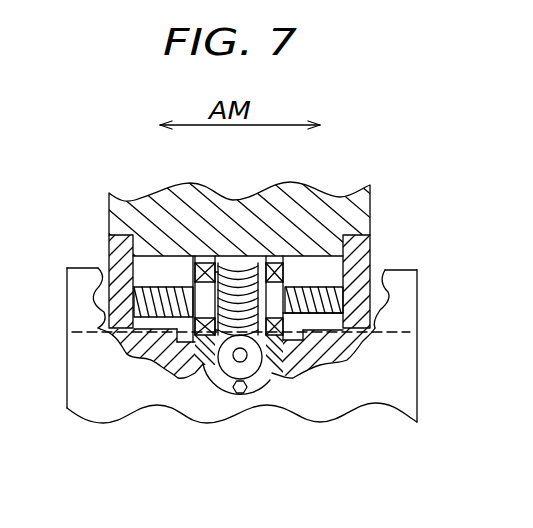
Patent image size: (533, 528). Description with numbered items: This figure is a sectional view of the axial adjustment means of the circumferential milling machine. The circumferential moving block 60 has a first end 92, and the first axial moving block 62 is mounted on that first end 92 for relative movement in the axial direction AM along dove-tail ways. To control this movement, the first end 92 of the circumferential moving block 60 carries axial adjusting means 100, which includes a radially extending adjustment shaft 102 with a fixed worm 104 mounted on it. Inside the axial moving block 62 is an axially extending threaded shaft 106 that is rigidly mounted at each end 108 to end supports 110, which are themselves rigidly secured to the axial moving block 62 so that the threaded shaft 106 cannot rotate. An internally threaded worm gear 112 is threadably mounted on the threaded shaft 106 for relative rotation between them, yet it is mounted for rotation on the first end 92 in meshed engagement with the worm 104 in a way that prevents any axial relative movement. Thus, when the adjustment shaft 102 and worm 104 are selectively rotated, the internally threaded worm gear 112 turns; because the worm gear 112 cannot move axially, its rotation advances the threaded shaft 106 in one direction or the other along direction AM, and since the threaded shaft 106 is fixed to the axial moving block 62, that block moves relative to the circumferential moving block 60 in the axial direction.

The circumferential moving block 60 is at (113, 403).
The first axial moving block 62 is at (318, 204).
The first end 92 is at (70, 357).
The axial adjusting means 100 is at (261, 418).
The adjustment shaft 102 is at (238, 355).
The worm 104 is at (228, 358).
The threaded shaft 106 is at (322, 312).
The end 108 is at (110, 299).
The end support 110 is at (110, 253).
The internally threaded worm gear 112 is at (237, 280).